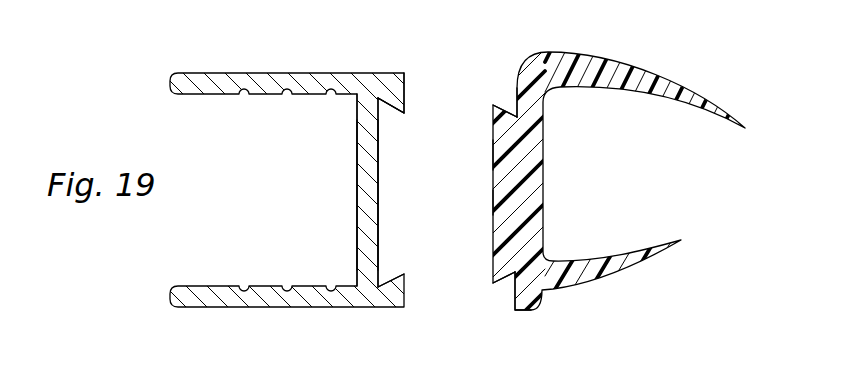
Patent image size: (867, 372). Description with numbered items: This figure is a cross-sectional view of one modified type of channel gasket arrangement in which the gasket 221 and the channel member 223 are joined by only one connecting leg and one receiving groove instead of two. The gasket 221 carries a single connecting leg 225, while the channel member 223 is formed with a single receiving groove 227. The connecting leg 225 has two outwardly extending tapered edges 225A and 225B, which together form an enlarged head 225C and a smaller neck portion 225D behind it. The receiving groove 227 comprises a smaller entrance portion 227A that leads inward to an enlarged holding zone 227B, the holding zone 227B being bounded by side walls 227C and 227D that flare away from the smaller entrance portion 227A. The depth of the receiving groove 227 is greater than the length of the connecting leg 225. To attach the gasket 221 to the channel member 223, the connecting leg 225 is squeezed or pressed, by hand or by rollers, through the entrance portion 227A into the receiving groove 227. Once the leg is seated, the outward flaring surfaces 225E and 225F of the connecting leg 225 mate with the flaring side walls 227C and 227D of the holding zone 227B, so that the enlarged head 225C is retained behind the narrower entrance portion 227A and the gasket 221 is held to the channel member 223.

The gasket 221 is at (677, 63).
The channel member 223 is at (300, 60).
The connecting leg 225 is at (493, 218).
The tapered edge 225A is at (492, 285).
The tapered edge 225B is at (493, 103).
The enlarged head 225C is at (500, 155).
The neck portion 225D is at (515, 202).
The outward flaring surface 225E is at (517, 116).
The outward flaring surface 225F is at (497, 277).
The receiving groove 227 is at (398, 245).
The entrance portion 227A is at (400, 148).
The holding zone 227B is at (388, 193).
The side wall 227C is at (392, 110).
The side wall 227D is at (388, 272).